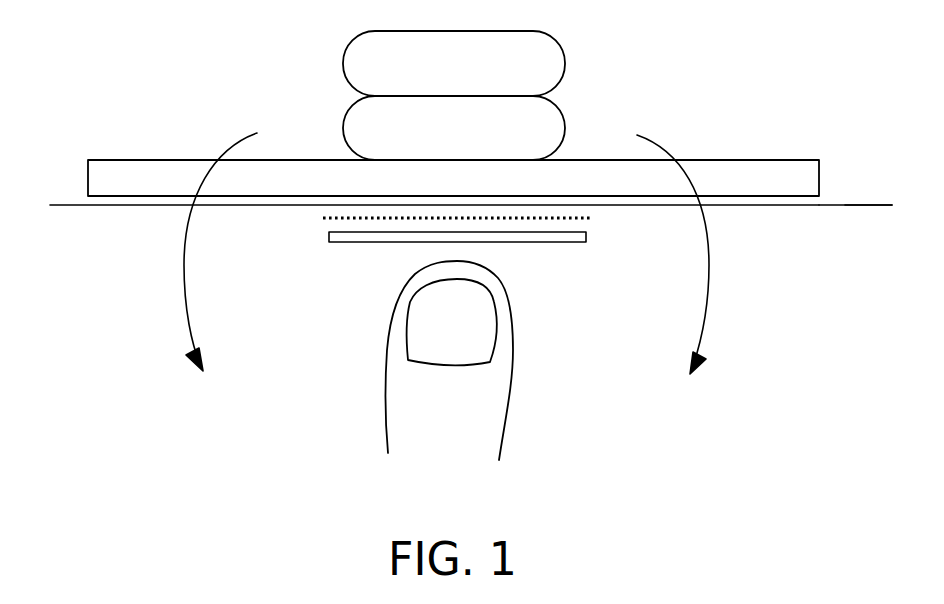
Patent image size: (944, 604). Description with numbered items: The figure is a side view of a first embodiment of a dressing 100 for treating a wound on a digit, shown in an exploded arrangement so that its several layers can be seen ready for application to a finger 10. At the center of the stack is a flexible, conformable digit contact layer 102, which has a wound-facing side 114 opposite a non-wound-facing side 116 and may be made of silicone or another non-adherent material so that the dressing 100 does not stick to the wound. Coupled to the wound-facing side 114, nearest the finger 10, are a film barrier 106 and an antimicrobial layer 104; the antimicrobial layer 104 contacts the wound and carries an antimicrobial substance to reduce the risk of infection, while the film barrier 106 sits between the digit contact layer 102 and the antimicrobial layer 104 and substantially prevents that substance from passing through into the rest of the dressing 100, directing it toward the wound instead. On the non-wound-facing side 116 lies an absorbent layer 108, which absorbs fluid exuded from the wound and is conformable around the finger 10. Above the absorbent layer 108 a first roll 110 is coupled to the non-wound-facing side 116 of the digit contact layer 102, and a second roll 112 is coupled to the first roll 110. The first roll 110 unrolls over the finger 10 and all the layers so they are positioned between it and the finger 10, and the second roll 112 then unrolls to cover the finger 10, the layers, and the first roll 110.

The dressing 100 is at (120, 22).
The finger 10 is at (498, 379).
The digit contact layer 102 is at (83, 206).
The antimicrobial layer 104 is at (331, 234).
The film barrier 106 is at (584, 220).
The absorbent layer 108 is at (107, 169).
The first roll 110 is at (354, 120).
The second roll 112 is at (363, 47).
The wound-facing side 114 is at (852, 206).
The non-wound-facing side 116 is at (853, 205).